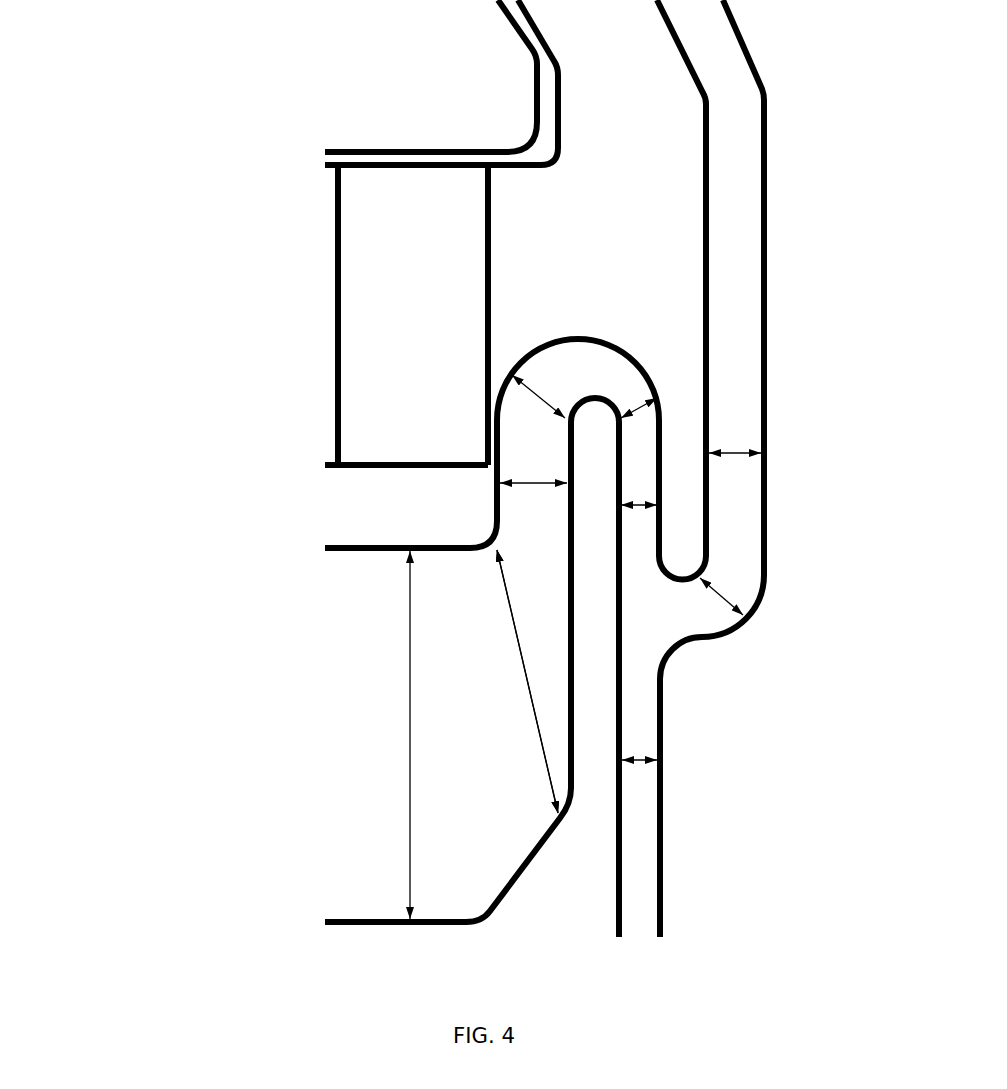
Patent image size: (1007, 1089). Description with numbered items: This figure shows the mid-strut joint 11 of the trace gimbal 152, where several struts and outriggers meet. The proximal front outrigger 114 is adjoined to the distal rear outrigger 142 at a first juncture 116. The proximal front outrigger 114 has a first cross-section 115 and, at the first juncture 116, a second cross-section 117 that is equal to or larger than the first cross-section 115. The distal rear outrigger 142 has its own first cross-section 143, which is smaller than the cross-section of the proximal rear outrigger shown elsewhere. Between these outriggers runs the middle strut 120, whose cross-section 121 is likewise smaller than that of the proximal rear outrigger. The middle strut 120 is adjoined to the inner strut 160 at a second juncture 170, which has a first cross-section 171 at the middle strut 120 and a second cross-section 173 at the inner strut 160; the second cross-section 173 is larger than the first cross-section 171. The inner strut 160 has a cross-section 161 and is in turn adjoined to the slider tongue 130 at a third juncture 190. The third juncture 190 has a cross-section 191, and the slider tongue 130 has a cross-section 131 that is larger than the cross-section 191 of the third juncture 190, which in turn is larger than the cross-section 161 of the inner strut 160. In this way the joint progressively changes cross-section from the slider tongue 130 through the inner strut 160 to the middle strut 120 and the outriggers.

The trace gimbal 152 is at (165, 460).
The mid-strut joint 11 is at (512, 340).
The proximal front outrigger 114 is at (730, 230).
The first cross-section 115 is at (735, 474).
The first juncture 116 is at (685, 620).
The second cross-section 117 is at (723, 591).
The middle strut 120 is at (642, 477).
The cross-section 121 is at (639, 521).
The slider tongue 130 is at (360, 863).
The cross-section 131 is at (428, 735).
The distal rear outrigger 142 is at (647, 827).
The first cross-section 143 is at (639, 778).
The inner strut 160 is at (515, 445).
The cross-section 161 is at (533, 500).
The second juncture 170 is at (577, 363).
The first cross-section 171 is at (639, 425).
The second cross-section 173 is at (538, 406).
The third juncture 190 is at (517, 697).
The cross-section 191 is at (528, 681).